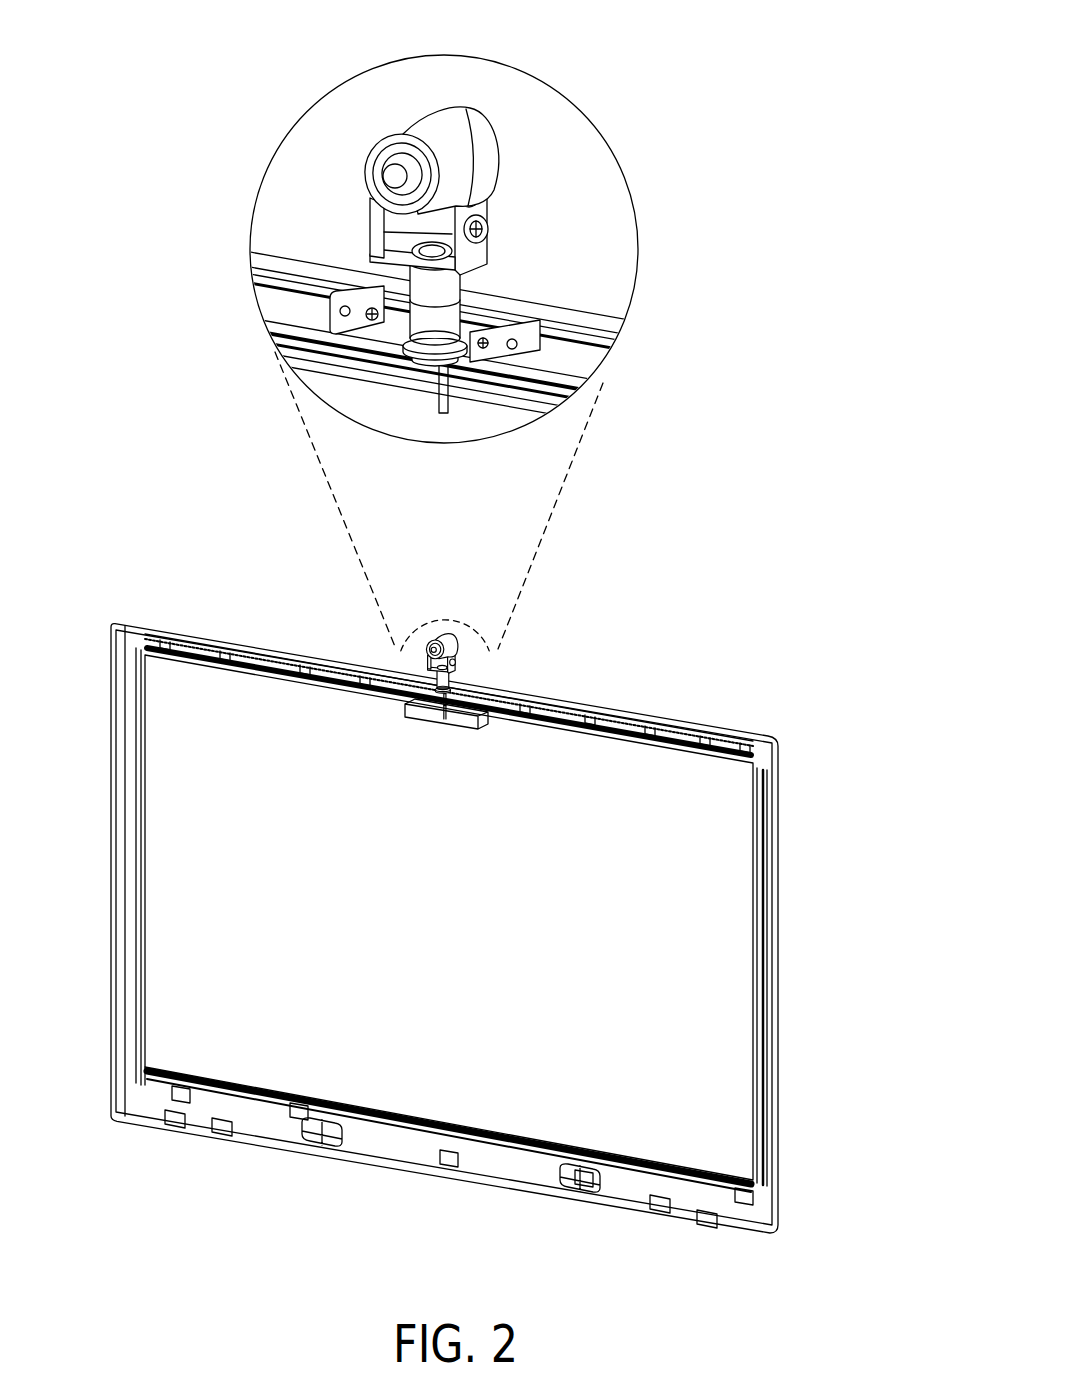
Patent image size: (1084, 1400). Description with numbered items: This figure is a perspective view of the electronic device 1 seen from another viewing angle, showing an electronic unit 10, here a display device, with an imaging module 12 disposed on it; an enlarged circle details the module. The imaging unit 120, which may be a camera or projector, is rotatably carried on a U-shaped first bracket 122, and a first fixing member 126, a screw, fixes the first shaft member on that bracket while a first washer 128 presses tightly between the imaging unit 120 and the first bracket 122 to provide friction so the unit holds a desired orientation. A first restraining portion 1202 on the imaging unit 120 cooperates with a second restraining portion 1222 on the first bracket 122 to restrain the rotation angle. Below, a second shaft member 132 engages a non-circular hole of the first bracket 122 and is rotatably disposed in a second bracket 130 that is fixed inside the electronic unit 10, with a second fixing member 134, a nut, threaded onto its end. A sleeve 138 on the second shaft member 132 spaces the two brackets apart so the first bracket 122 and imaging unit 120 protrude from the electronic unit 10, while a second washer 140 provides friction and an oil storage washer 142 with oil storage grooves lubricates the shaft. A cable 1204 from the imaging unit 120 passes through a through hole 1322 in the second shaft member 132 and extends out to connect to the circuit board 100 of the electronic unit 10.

The electronic device 1 is at (502, 625).
The electronic unit 10 is at (730, 724).
The imaging module 12 is at (464, 635).
The circuit board 100 is at (466, 728).
The imaging unit 120 is at (413, 122).
The first bracket 122 is at (374, 213).
The first fixing member 126 is at (487, 254).
The first washer 128 is at (490, 230).
The second bracket 130 is at (607, 370).
The second shaft member 132 is at (458, 284).
The second fixing member 134 is at (413, 361).
The sleeve 138 is at (461, 302).
The second washer 140 is at (458, 355).
The oil storage washer 142 is at (402, 341).
The first restraining portion 1202 is at (483, 198).
The cable 1204 is at (445, 368).
The second restraining portion 1222 is at (488, 212).
The through hole 1322 is at (430, 245).